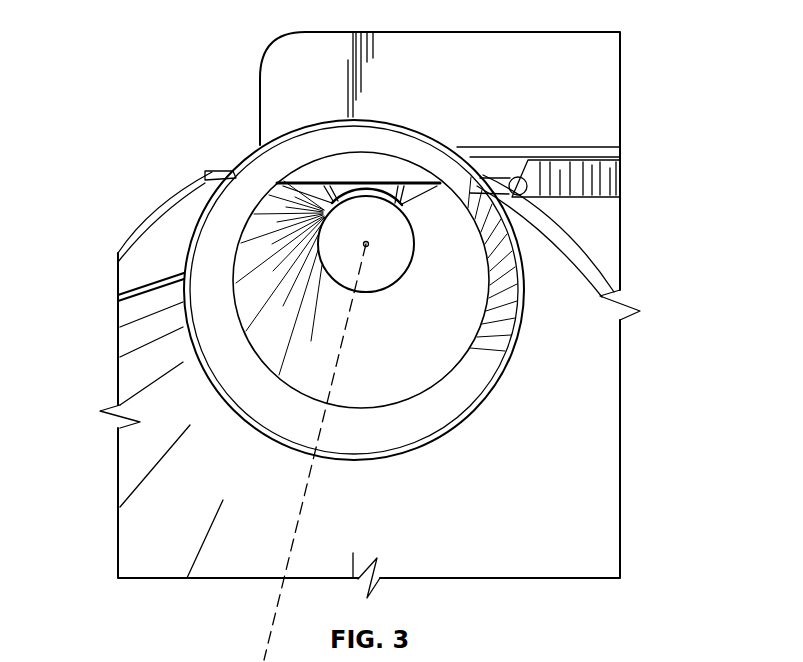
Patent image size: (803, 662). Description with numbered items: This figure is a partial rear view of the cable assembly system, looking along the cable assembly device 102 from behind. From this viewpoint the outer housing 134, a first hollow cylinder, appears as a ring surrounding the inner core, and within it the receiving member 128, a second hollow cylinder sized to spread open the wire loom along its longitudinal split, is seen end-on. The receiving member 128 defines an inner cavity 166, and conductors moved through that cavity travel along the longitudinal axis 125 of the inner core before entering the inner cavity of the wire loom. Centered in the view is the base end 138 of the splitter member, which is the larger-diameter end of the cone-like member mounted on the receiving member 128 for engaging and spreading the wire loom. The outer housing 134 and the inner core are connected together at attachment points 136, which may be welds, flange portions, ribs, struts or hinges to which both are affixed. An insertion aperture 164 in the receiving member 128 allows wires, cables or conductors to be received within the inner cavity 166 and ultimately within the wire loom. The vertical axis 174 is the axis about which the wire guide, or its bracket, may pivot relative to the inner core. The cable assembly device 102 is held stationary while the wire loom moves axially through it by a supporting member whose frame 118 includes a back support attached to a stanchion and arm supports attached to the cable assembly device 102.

The cable assembly device 102 is at (140, 38).
The frame 118 is at (511, 85).
The longitudinal axis 125 is at (310, 492).
The receiving member 128 is at (510, 347).
The outer housing 134 is at (600, 273).
The attachment points 136 is at (236, 160).
The base end 138 is at (380, 222).
The insertion aperture 164 is at (343, 181).
The inner cavity 166 is at (436, 339).
The vertical axis 174 is at (268, 661).